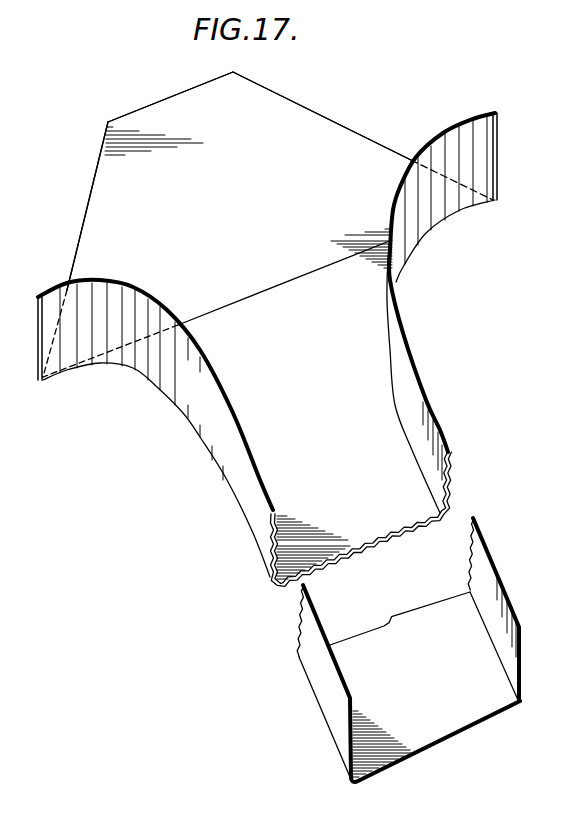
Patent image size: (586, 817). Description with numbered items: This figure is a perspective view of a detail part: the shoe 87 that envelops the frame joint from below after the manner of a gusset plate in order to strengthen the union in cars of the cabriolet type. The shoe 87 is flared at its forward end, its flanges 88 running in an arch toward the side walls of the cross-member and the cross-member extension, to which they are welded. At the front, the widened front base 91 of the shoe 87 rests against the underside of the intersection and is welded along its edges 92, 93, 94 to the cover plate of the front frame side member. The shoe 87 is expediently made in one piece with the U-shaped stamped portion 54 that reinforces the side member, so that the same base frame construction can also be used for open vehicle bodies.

The U-shaped stamped portion 54 is at (355, 658).
The shoe 87 is at (318, 411).
The flanges 88 is at (157, 360).
The widened front base 91 is at (233, 211).
The edge 92 is at (78, 240).
The edge 93 is at (173, 97).
The edge 94 is at (316, 112).